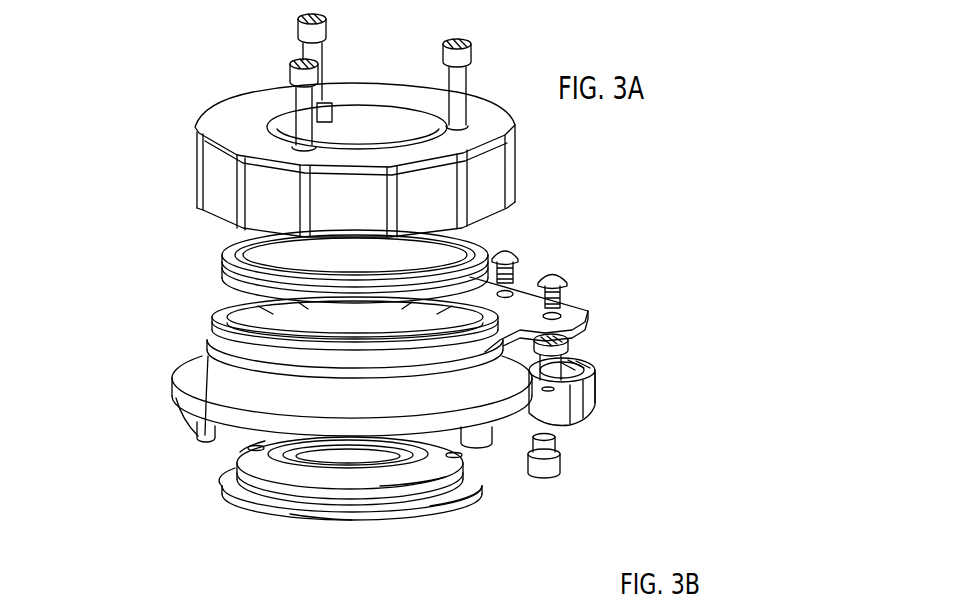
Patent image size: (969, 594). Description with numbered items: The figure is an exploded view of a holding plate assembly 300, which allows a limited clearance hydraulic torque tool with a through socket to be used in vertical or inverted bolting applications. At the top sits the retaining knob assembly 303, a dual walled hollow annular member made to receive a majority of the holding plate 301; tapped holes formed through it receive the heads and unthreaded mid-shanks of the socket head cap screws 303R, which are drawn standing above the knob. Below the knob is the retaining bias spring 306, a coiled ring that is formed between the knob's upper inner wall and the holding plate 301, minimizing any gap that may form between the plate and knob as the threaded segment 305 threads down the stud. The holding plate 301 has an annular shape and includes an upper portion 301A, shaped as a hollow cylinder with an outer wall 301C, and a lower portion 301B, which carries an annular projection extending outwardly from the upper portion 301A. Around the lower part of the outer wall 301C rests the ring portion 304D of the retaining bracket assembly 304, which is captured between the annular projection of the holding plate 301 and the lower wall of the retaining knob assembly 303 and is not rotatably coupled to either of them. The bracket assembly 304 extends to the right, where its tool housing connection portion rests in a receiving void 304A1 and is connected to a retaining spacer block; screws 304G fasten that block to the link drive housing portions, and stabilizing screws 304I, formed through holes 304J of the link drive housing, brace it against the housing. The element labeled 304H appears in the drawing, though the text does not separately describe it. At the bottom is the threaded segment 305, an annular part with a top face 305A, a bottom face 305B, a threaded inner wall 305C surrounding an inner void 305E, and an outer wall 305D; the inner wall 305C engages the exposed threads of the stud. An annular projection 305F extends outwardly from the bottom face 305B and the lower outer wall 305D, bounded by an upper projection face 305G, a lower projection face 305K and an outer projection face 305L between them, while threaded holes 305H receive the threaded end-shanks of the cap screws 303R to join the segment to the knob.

The holding plate assembly 300 is at (104, 206).
The retaining knob assembly 303 is at (216, 106).
The socket head cap screws 303R is at (466, 84).
The retaining bias spring 306 is at (220, 256).
The upper portion 301A is at (212, 320).
The outer wall 301C is at (162, 316).
The holding plate 301 is at (150, 367).
The lower portion 301B is at (177, 392).
The ring portion 304D is at (222, 401).
The retaining bracket assembly 304 is at (608, 358).
The holes 304J is at (560, 427).
The screws 304G is at (620, 390).
The bracket block body 304H is at (620, 397).
The receiving void 304A1 is at (597, 397).
The stabilizing screws 304I is at (567, 462).
The threaded segment 305 is at (453, 506).
The top face 305A is at (253, 443).
The bottom face 305B is at (267, 500).
The threaded inner wall 305C is at (403, 507).
The outer wall 305D is at (357, 500).
The inner void 305E is at (342, 530).
The annular projection 305F is at (478, 484).
The upper projection face 305G is at (263, 507).
The threaded holes 305H is at (472, 457).
The lower projection face 305K is at (310, 527).
The outer projection face 305L is at (440, 513).